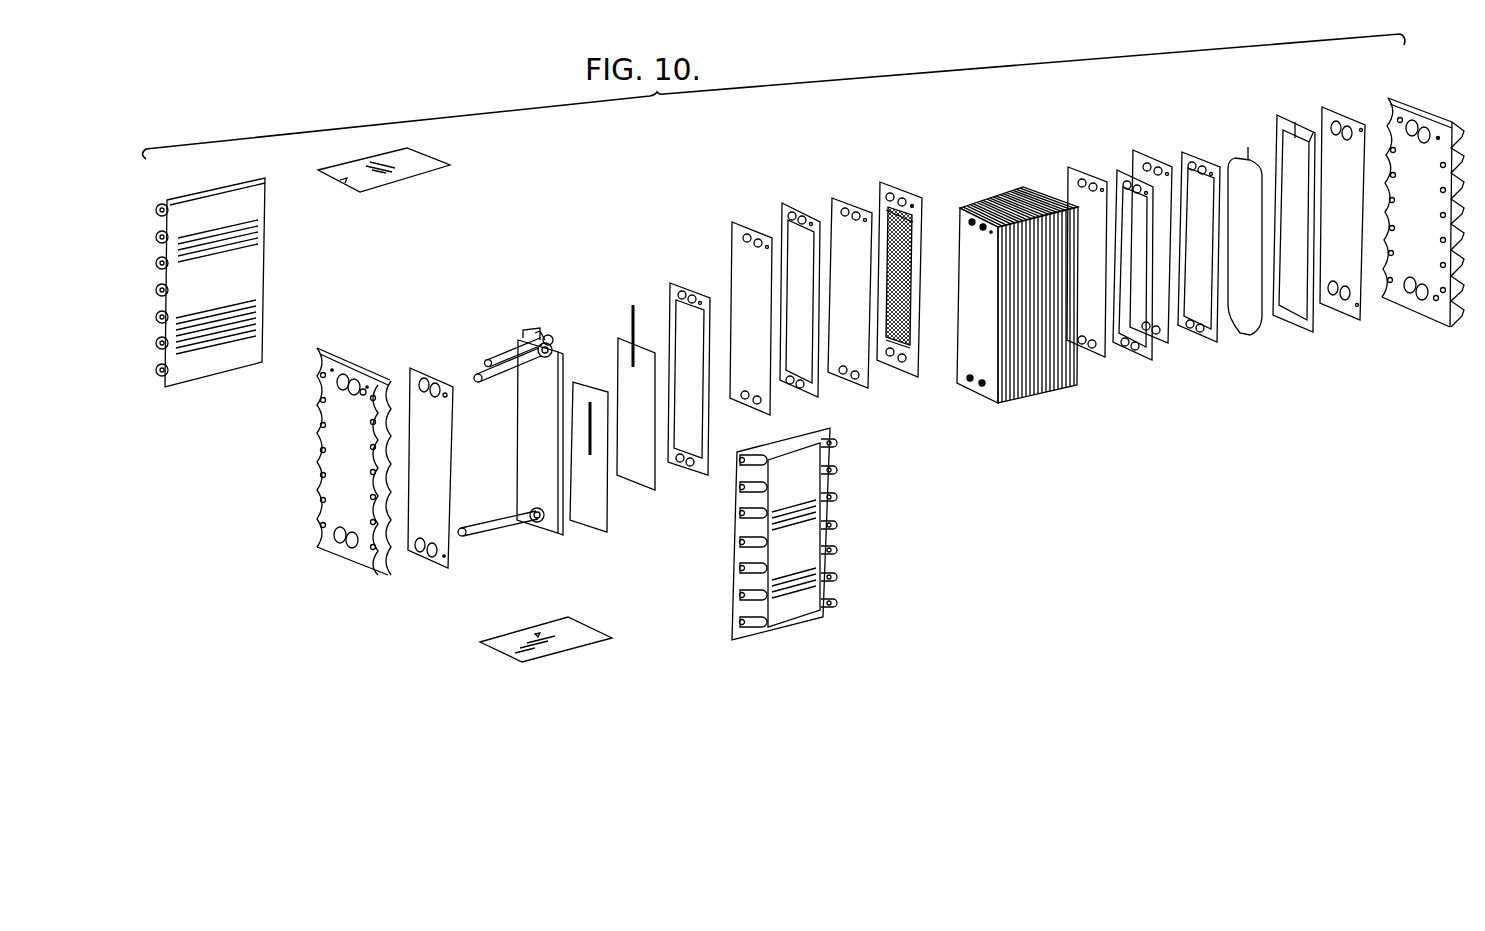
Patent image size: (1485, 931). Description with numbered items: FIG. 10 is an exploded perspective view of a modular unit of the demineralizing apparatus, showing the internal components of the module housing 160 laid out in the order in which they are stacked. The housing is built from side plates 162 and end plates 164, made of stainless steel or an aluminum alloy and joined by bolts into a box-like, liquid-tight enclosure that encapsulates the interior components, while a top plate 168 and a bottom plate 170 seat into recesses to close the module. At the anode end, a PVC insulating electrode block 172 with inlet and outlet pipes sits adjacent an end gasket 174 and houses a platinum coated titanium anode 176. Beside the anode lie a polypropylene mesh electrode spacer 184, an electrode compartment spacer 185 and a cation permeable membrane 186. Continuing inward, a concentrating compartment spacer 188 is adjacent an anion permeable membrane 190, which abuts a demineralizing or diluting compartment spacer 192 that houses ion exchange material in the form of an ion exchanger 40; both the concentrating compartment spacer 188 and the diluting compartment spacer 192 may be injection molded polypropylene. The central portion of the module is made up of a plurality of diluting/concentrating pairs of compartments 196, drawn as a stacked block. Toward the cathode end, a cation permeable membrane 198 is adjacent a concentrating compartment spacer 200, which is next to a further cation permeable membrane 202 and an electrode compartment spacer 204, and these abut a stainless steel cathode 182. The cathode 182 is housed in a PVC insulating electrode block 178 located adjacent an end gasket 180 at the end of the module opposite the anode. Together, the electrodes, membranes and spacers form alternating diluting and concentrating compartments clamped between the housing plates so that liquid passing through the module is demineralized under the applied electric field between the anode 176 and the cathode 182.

The ion exchanger 40 is at (910, 250).
The module housing 160 is at (1118, 507).
The side plates 162 is at (263, 315).
The end plates 164 is at (318, 508).
The top plate 168 is at (413, 168).
The bottom plate 170 is at (567, 650).
The PVC insulating electrode block 172 is at (540, 530).
The end gasket 174 is at (438, 528).
The platinum coated titanium anode 176 is at (593, 498).
The PVC insulating electrode block 178 is at (1300, 323).
The end gasket 180 is at (1347, 122).
The stainless steel cathode 182 is at (1238, 165).
The polypropylene mesh electrode spacer 184 is at (640, 457).
The electrode compartment spacer 185 is at (672, 303).
The cation permeable membrane 186 is at (732, 255).
The concentrating compartment spacer 188 is at (782, 230).
The anion permeable membrane 190 is at (858, 350).
The demineralizing or diluting compartment spacer 192 is at (907, 367).
The diluting/concentrating pairs of compartments 196 is at (1023, 187).
The cation permeable membrane 198 is at (1100, 173).
The concentrating compartment spacer 200 is at (1133, 353).
The cation permeable membrane 202 is at (1160, 157).
The electrode compartment spacer 204 is at (1228, 323).